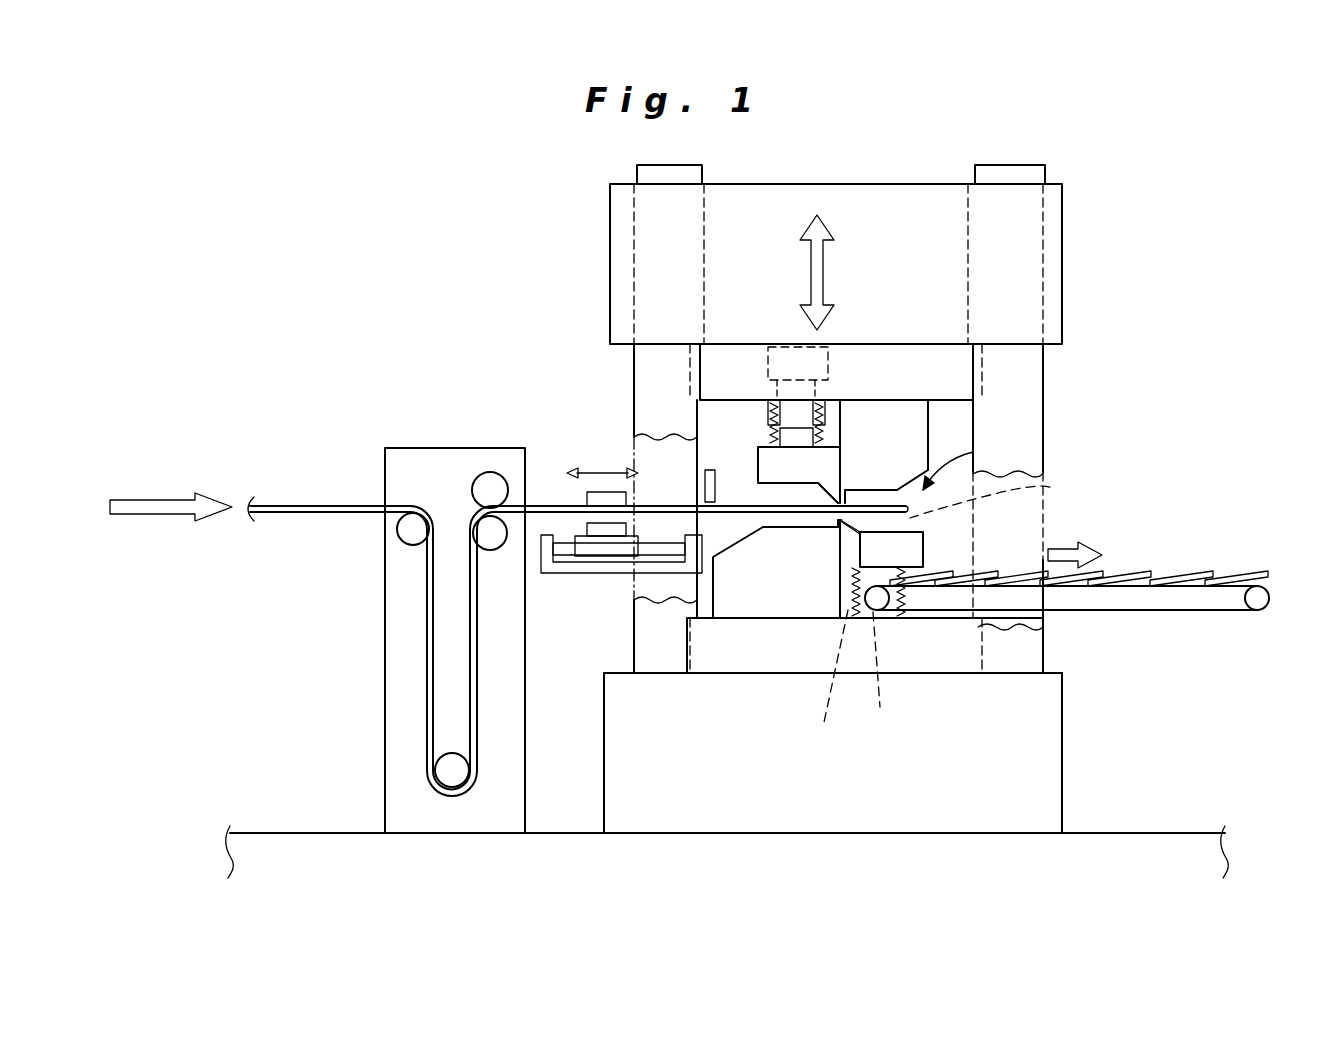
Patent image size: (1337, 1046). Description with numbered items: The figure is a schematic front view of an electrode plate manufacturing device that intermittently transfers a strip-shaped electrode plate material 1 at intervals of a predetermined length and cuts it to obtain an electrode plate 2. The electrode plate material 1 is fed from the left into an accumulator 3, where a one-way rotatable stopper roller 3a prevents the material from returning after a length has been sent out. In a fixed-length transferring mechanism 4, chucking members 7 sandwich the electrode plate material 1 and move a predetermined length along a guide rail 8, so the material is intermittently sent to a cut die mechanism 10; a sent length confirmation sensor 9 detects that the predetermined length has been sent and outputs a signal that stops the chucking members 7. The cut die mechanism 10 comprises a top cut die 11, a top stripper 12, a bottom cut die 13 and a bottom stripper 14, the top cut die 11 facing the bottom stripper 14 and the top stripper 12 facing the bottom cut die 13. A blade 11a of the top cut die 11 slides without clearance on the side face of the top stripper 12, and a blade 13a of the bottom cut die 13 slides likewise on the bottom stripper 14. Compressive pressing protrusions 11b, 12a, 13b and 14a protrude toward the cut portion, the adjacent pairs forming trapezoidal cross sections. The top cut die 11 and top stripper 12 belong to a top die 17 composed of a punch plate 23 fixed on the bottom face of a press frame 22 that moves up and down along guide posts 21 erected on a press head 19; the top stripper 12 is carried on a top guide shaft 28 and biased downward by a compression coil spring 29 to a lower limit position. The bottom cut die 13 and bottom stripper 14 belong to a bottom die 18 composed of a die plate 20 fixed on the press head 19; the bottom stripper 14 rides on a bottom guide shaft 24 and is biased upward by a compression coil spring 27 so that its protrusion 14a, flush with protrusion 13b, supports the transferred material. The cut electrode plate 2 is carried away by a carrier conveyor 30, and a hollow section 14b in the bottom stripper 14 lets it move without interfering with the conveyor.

The electrode plate material 1 is at (319, 504).
The electrode plate 2 is at (950, 575).
The accumulator 3 is at (455, 446).
The one-way rotatable stopper roller 3a is at (490, 492).
The fixed-length transferring mechanism 4 is at (579, 587).
The chucking members 7 is at (587, 528).
The guide rail 8 is at (663, 548).
The sent length confirmation sensor 9 is at (712, 466).
The cut die mechanism 10 is at (969, 463).
The top cut die 11 is at (903, 452).
The blade 11a is at (833, 478).
The compressive pressing protrusion 11b is at (832, 477).
The top stripper 12 is at (795, 462).
The compressive pressing protrusion 12a is at (836, 500).
The bottom cut die 13 is at (790, 545).
The blade 13a is at (843, 556).
The compressive pressing protrusion 13b is at (830, 526).
The bottom stripper 14 is at (893, 553).
The compressive pressing protrusion 14a is at (845, 556).
The hollow section 14b is at (1056, 488).
The top die 17 is at (1086, 301).
The bottom die 18 is at (1084, 740).
The press head 19 is at (1052, 778).
The die plate 20 is at (927, 648).
The guide posts 21 is at (648, 366).
The press frame 22 is at (1065, 237).
The punch plate 23 is at (893, 385).
The bottom guide shaft 24 is at (878, 657).
The compression coil spring 27 is at (827, 689).
The top guide shaft 28 is at (805, 430).
The compression coil spring 29 is at (772, 430).
The carrier conveyor 30 is at (1185, 610).